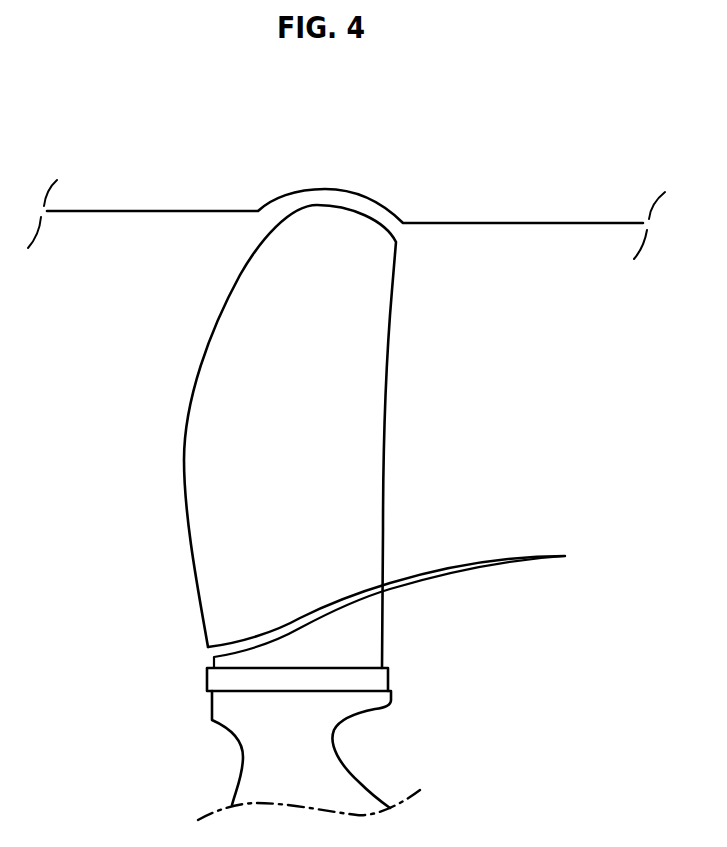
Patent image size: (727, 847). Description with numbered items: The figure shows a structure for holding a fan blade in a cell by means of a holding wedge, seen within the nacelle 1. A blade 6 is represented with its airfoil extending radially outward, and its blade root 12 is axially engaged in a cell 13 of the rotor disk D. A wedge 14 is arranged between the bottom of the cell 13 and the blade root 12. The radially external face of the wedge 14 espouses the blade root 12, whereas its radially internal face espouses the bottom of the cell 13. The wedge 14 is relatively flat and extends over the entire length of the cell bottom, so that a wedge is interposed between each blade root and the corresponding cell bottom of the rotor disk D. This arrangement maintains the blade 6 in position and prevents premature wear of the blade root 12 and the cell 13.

The nacelle 1 is at (520, 228).
The blade 6 is at (300, 468).
The blade root 12 is at (328, 660).
The cell 13 is at (370, 681).
The wedge 14 is at (243, 692).
The rotor disk D is at (300, 766).